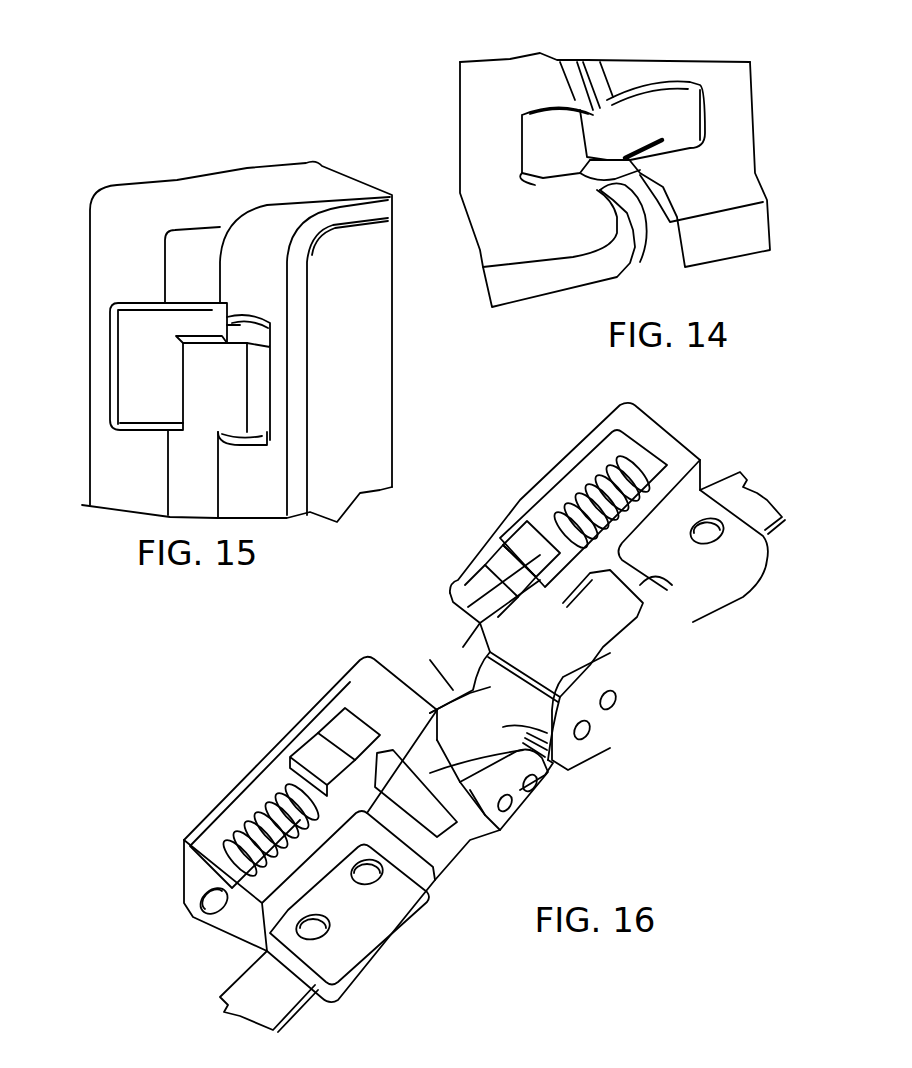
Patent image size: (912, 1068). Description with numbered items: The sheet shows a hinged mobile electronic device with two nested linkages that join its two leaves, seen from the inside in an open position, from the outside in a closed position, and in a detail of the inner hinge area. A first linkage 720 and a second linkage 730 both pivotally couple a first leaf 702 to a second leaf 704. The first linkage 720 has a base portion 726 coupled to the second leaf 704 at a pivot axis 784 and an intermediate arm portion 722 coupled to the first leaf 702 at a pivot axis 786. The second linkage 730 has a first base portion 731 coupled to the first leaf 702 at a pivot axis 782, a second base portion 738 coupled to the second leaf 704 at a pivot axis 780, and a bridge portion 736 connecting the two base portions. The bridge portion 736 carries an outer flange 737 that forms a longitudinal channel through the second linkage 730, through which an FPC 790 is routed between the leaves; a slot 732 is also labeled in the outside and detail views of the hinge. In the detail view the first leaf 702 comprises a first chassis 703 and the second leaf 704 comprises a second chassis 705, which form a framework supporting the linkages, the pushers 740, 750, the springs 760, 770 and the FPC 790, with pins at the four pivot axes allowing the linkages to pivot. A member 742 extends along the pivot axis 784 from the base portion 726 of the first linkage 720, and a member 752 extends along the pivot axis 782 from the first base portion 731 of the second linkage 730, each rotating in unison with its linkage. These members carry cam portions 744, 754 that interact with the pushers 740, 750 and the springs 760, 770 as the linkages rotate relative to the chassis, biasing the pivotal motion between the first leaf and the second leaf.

In FIG. 15, the first leaf 702 is at (106, 186).
In FIG. 14, the first leaf 702 is at (752, 262).
In FIG. 16, the first leaf 702 is at (454, 965).
In FIG. 16, the first chassis 703 is at (375, 952).
In FIG. 15, the second leaf 704 is at (277, 193).
In FIG. 14, the second leaf 704 is at (540, 293).
In FIG. 16, the second leaf 704 is at (746, 689).
In FIG. 16, the second chassis 705 is at (716, 605).
In FIG. 15, the first linkage 720 is at (270, 338).
In FIG. 14, the first linkage 720 is at (549, 110).
In FIG. 16, the first linkage 720 is at (580, 666).
In FIG. 15, the arm portion 722 is at (247, 330).
In FIG. 14, the arm portion 722 is at (633, 187).
In FIG. 16, the arm portion 722 is at (447, 687).
In FIG. 15, the base portion 726 is at (205, 320).
In FIG. 14, the base portion 726 is at (537, 127).
In FIG. 16, the base portion 726 is at (553, 637).
In FIG. 15, the second linkage 730 is at (118, 351).
In FIG. 14, the second linkage 730 is at (650, 87).
In FIG. 16, the second linkage 730 is at (449, 776).
In FIG. 15, the first base portion 731 is at (135, 390).
In FIG. 14, the first base portion 731 is at (677, 97).
In FIG. 16, the first base portion 731 is at (457, 760).
In FIG. 14, the slot 732 is at (687, 137).
In FIG. 16, the slot 732 is at (403, 710).
In FIG. 16, the bridge portion 736 is at (580, 748).
In FIG. 15, the outer flange 737 is at (220, 375).
In FIG. 14, the outer flange 737 is at (610, 128).
In FIG. 16, the outer flange 737 is at (563, 773).
In FIG. 15, the second base portion 738 is at (257, 403).
In FIG. 16, the pusher 740 is at (520, 547).
In FIG. 16, the member 742 is at (477, 595).
In FIG. 16, the cam portion 744 is at (497, 573).
In FIG. 16, the pusher 750 is at (313, 757).
In FIG. 16, the member 752 is at (367, 707).
In FIG. 16, the cam portion 754 is at (343, 723).
In FIG. 16, the spring 760 is at (573, 497).
In FIG. 16, the spring 770 is at (257, 820).
In FIG. 16, the pivot axis 780 is at (587, 733).
In FIG. 16, the pivot axis 782 is at (510, 807).
In FIG. 16, the pivot axis 784 is at (610, 700).
In FIG. 16, the pivot axis 786 is at (533, 787).
In FIG. 16, the FPC 790 is at (260, 988).